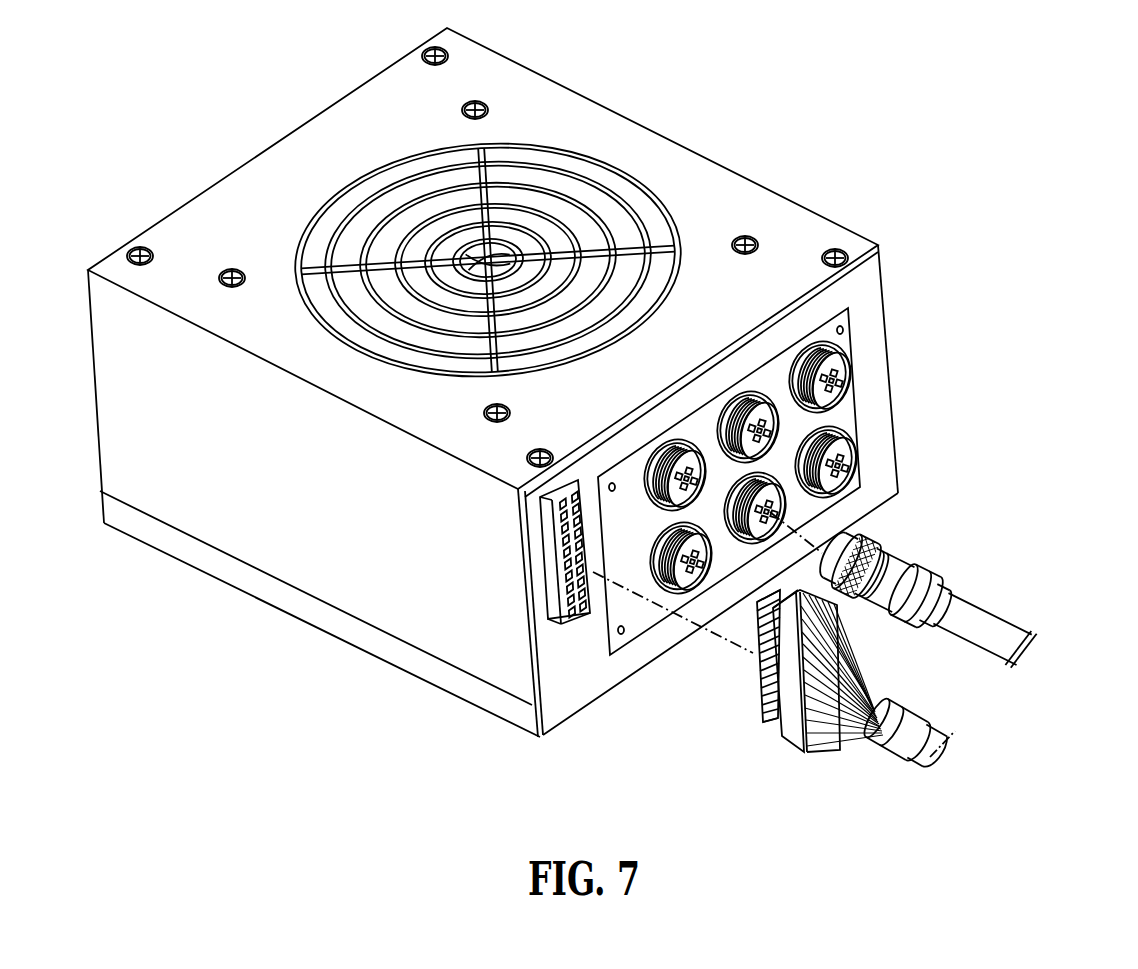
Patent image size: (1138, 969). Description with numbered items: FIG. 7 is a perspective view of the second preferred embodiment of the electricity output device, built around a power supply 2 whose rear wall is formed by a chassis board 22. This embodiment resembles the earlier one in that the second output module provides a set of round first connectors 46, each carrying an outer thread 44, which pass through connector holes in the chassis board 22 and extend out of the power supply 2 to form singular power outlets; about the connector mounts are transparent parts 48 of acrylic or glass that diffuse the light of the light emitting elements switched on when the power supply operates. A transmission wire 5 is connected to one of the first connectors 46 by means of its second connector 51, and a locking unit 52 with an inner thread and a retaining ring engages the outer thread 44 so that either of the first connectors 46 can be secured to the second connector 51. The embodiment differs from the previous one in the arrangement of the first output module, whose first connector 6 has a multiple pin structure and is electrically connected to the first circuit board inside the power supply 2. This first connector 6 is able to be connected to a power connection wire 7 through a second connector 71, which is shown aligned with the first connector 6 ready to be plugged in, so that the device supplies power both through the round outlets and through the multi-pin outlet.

The power supply 2 is at (247, 187).
The chassis board 22 is at (580, 675).
The first connector 6 is at (561, 562).
The outer thread 44 is at (818, 352).
The first connector 46 is at (843, 377).
The transparent part 48 is at (668, 590).
The second connector 51 is at (853, 537).
The locking unit 52 is at (857, 603).
The transmission wire 5 is at (987, 617).
The second connector 71 is at (793, 707).
The power connection wire 7 is at (903, 733).